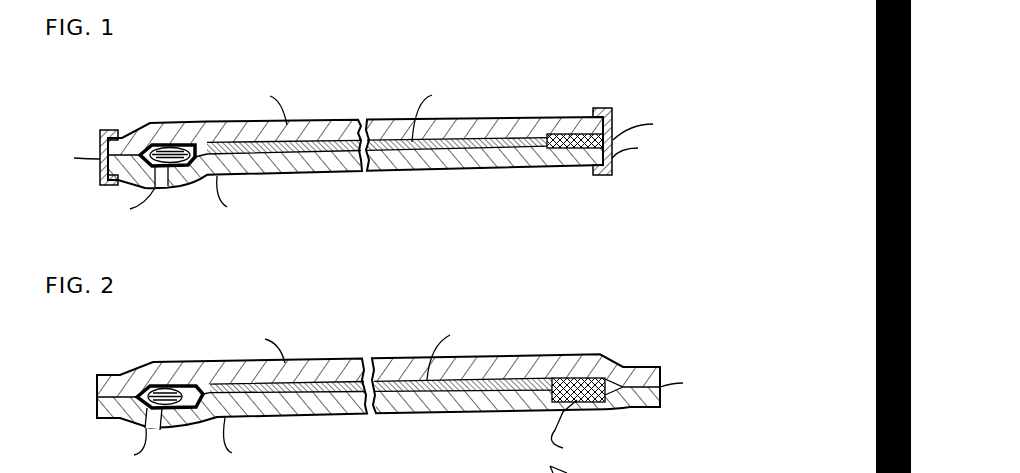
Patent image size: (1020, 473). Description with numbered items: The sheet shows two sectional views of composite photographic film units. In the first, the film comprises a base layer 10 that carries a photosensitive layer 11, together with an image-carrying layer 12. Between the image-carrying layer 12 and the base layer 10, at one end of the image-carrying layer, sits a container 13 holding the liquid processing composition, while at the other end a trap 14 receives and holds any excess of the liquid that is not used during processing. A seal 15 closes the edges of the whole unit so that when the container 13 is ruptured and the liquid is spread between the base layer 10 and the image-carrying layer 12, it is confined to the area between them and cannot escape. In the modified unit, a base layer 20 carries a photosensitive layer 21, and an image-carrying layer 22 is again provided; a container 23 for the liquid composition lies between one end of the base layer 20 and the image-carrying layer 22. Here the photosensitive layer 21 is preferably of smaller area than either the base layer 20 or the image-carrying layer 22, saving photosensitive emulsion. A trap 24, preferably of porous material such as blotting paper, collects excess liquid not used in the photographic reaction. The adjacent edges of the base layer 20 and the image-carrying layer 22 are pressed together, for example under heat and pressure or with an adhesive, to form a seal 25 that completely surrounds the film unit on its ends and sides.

In FIG. 1, the base layer 10 is at (310, 123).
In FIG. 1, the photosensitive layer 11 is at (378, 138).
In FIG. 1, the image-carrying layer 12 is at (460, 172).
In FIG. 1, the container 13 is at (167, 188).
In FIG. 1, the trap 14 is at (552, 148).
In FIG. 1, the seal 15 is at (99, 132).
In FIG. 2, the base layer 20 is at (338, 360).
In FIG. 2, the photosensitive layer 21 is at (384, 385).
In FIG. 2, the image-carrying layer 22 is at (443, 415).
In FIG. 2, the container 23 is at (161, 430).
In FIG. 2, the trap 24 is at (560, 401).
In FIG. 2, the seal 25 is at (95, 397).